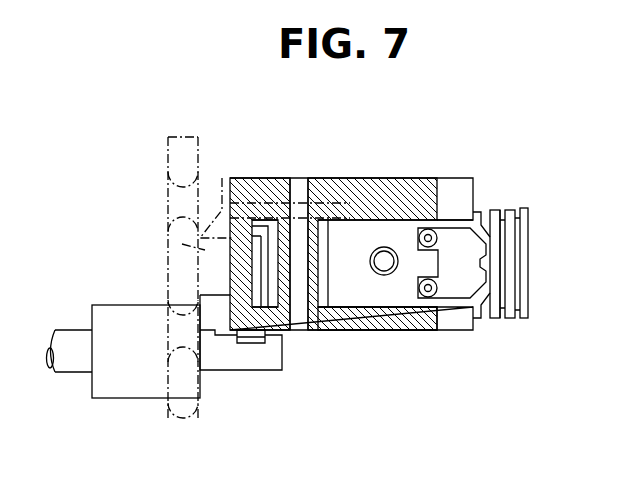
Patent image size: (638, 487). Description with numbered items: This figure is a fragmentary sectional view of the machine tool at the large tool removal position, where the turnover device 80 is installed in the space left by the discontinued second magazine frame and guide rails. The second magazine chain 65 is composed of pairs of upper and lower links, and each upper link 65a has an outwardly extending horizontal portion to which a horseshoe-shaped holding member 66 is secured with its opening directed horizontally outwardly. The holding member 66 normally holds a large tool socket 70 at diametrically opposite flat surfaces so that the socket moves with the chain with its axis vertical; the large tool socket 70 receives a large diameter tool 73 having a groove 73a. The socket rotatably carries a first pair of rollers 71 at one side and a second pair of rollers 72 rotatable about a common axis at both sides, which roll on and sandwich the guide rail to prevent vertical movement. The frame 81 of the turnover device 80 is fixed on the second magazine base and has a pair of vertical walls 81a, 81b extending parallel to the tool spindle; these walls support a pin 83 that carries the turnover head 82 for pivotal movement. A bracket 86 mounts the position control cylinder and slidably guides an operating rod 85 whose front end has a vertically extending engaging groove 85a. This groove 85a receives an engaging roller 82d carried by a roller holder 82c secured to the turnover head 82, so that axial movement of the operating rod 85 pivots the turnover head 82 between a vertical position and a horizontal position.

The second magazine chain 65 is at (167, 206).
The upper link 65a is at (182, 244).
The holding member 66 is at (222, 178).
The large tool socket 70 is at (353, 322).
The first pair of rollers 71 is at (403, 331).
The second pair of rollers 72 is at (372, 260).
The large diameter tool 73 is at (497, 322).
The groove 73a is at (510, 210).
The turnover device 80 is at (372, 134).
The frame 81 is at (418, 182).
The vertical wall 81a is at (352, 183).
The vertical wall 81b is at (425, 331).
The turnover head 82 is at (283, 222).
The roller holder 82c is at (268, 272).
The engaging roller 82d is at (243, 342).
The pin 83 is at (302, 182).
The operating rod 85 is at (73, 366).
The engaging groove 85a is at (258, 346).
The bracket 86 is at (143, 391).